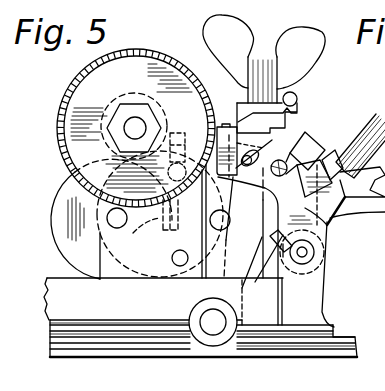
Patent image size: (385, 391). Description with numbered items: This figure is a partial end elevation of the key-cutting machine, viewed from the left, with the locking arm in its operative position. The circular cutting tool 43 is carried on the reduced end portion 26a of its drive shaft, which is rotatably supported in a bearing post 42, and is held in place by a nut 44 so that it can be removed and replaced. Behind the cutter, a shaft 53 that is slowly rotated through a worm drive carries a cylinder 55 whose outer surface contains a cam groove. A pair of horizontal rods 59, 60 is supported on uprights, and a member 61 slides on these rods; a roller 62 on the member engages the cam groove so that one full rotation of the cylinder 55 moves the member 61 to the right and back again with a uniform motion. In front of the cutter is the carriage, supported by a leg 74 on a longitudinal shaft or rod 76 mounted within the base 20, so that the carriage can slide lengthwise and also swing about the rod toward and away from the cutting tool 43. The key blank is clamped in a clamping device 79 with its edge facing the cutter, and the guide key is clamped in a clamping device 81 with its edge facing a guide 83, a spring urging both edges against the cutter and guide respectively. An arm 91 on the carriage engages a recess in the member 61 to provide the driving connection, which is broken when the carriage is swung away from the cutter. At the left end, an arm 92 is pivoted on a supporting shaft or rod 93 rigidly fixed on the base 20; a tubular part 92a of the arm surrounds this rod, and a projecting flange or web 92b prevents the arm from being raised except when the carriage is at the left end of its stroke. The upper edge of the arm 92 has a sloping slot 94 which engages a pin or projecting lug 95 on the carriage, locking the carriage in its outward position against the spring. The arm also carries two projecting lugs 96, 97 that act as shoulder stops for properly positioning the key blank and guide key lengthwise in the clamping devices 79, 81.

The base 20 is at (90, 315).
The reduced end portion of the shaft 26a is at (130, 126).
The bearing post 42 is at (100, 247).
The circular cutting tool 43 is at (95, 83).
The nut 44 is at (118, 137).
The shaft 53 is at (108, 214).
The cylinder (cam) 55 is at (65, 222).
The horizontal rod 59 is at (181, 132).
The horizontal rod 60 is at (178, 266).
The sliding member 61 is at (203, 203).
The roller 62 is at (104, 248).
The leg 74 is at (250, 286).
The longitudinal shaft or rod 76 is at (215, 330).
The clamping device 79 is at (296, 93).
The clamping device 81 is at (362, 125).
The guide 83 is at (316, 148).
The arm 91 is at (205, 280).
The arm 92 is at (330, 220).
The tubular part 92a is at (318, 247).
The projecting flange or web 92b is at (271, 243).
The supporting shaft or rod 93 is at (307, 256).
The sloping slot 94 is at (233, 214).
The pin or projecting lug 95 is at (258, 170).
The projecting lug 96 is at (222, 123).
The projecting lug 97 is at (333, 160).